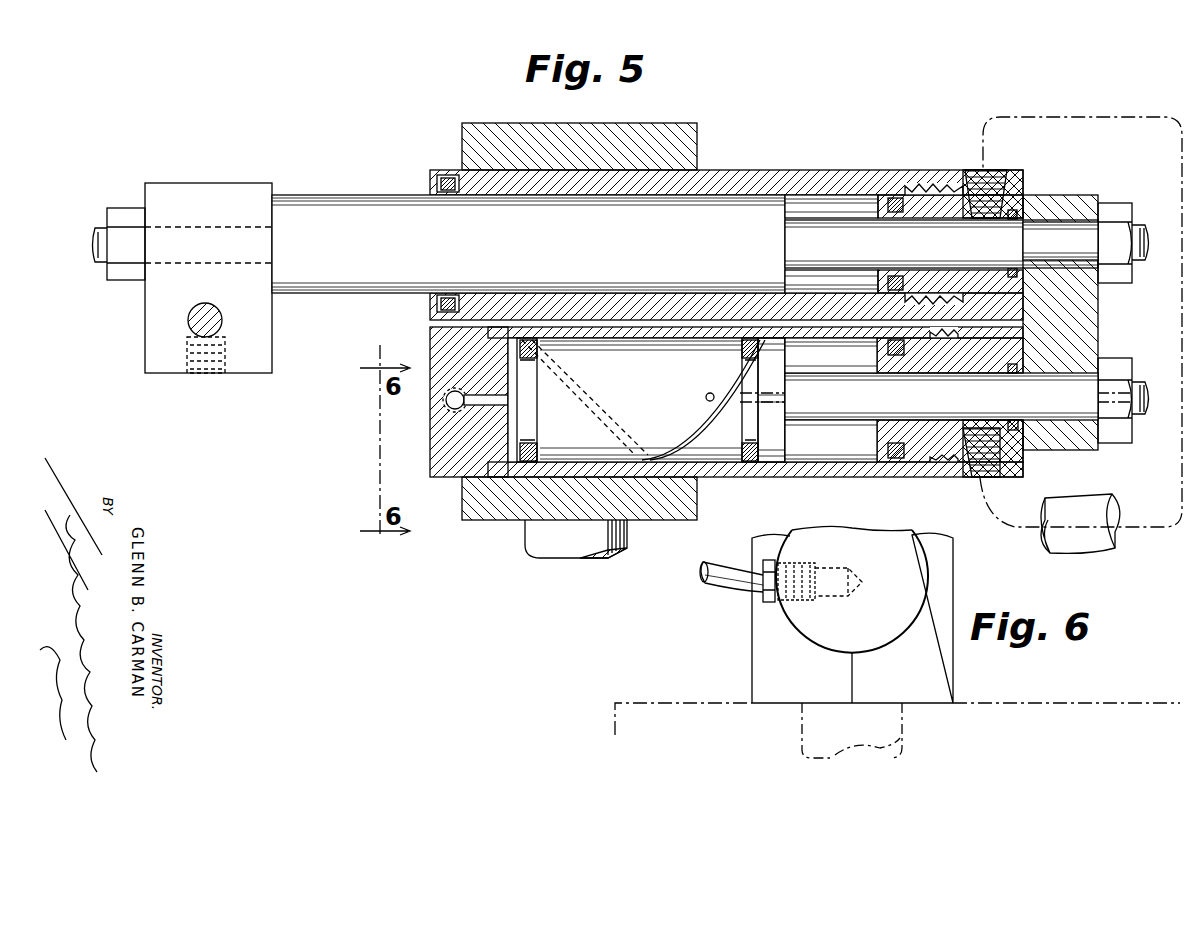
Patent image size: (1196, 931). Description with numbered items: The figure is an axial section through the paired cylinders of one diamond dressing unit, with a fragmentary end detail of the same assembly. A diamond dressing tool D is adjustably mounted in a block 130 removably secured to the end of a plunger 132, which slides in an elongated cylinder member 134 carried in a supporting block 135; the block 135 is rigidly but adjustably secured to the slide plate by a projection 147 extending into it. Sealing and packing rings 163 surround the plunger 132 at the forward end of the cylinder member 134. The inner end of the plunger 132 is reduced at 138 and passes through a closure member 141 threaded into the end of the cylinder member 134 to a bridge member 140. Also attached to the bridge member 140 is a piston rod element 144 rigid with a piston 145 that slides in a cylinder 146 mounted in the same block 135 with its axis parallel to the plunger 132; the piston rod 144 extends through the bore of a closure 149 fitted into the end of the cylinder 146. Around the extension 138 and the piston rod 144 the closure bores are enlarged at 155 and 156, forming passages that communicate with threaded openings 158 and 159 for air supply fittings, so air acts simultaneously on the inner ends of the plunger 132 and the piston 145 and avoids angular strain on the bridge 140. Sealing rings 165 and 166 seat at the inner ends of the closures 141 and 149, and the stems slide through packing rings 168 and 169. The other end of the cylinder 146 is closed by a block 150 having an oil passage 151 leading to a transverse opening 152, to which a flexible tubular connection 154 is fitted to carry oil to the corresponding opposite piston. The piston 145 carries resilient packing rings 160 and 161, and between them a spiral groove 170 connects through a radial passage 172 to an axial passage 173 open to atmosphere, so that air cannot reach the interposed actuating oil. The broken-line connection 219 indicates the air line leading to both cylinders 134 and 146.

In FIG. 5, the block 130 is at (258, 329).
In FIG. 5, the diamond dressing tool D is at (190, 322).
In FIG. 5, the plunger 132 is at (357, 200).
In FIG. 5, the cylinder member 134 is at (786, 172).
In FIG. 5, the supporting block 135 is at (664, 128).
In FIG. 6, the supporting block 135 is at (752, 631).
In FIG. 5, the reduced end 138 is at (845, 218).
In FIG. 5, the bridge member 140 is at (1086, 317).
In FIG. 5, the closure member 141 is at (915, 190).
In FIG. 5, the piston rod element 144 is at (856, 382).
In FIG. 5, the piston 145 is at (820, 400).
In FIG. 5, the cylinder 146 is at (812, 478).
In FIG. 5, the projection 147 is at (553, 558).
In FIG. 6, the projection 147 is at (812, 730).
In FIG. 5, the closure 149 is at (930, 460).
In FIG. 5, the block 150 is at (440, 456).
In FIG. 6, the block 150 is at (888, 625).
In FIG. 5, the oil passage 151 is at (494, 403).
In FIG. 6, the oil passage 151 is at (849, 566).
In FIG. 5, the transverse opening 152 is at (446, 400).
In FIG. 6, the transverse opening 152 is at (832, 588).
In FIG. 6, the tubular connection 154 is at (748, 600).
In FIG. 5, the enlarged bore 155 is at (930, 210).
In FIG. 5, the enlarged bore 156 is at (882, 433).
In FIG. 5, the threaded opening 158 is at (993, 177).
In FIG. 5, the threaded opening 159 is at (988, 470).
In FIG. 5, the packing ring 160 is at (530, 455).
In FIG. 5, the packing ring 161 is at (746, 442).
In FIG. 5, the sealing and packing rings 163 is at (447, 192).
In FIG. 5, the sealing ring 165 is at (892, 200).
In FIG. 5, the sealing ring 166 is at (906, 460).
In FIG. 5, the packing ring 168 is at (1015, 212).
In FIG. 5, the packing ring 169 is at (1016, 456).
In FIG. 5, the spiral groove 170 is at (698, 420).
In FIG. 5, the radial passage 172 is at (705, 395).
In FIG. 5, the axial passage 173 is at (1115, 392).
In FIG. 5, the air line connection 219 is at (1077, 116).